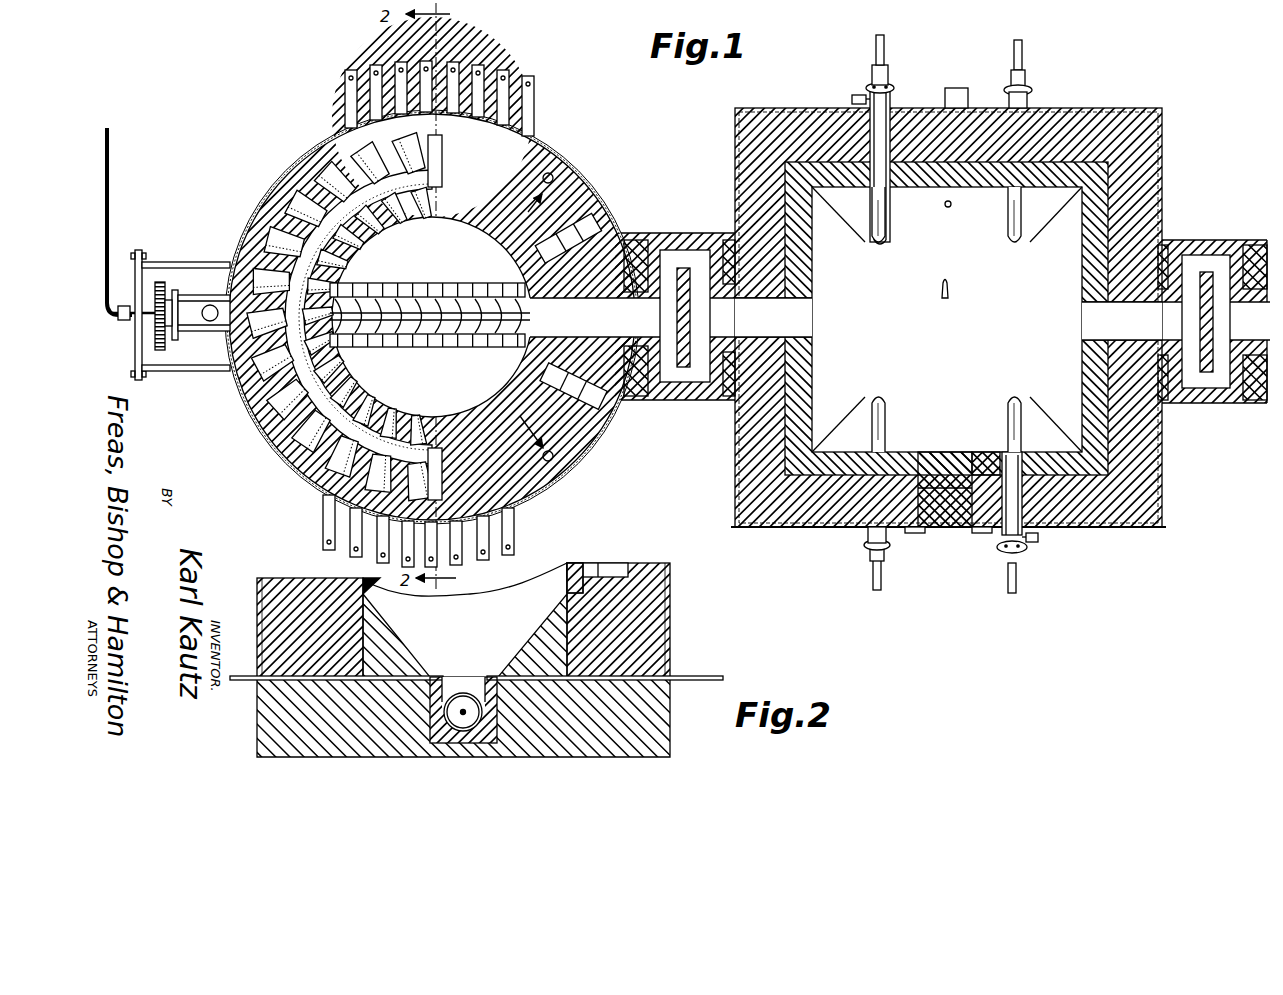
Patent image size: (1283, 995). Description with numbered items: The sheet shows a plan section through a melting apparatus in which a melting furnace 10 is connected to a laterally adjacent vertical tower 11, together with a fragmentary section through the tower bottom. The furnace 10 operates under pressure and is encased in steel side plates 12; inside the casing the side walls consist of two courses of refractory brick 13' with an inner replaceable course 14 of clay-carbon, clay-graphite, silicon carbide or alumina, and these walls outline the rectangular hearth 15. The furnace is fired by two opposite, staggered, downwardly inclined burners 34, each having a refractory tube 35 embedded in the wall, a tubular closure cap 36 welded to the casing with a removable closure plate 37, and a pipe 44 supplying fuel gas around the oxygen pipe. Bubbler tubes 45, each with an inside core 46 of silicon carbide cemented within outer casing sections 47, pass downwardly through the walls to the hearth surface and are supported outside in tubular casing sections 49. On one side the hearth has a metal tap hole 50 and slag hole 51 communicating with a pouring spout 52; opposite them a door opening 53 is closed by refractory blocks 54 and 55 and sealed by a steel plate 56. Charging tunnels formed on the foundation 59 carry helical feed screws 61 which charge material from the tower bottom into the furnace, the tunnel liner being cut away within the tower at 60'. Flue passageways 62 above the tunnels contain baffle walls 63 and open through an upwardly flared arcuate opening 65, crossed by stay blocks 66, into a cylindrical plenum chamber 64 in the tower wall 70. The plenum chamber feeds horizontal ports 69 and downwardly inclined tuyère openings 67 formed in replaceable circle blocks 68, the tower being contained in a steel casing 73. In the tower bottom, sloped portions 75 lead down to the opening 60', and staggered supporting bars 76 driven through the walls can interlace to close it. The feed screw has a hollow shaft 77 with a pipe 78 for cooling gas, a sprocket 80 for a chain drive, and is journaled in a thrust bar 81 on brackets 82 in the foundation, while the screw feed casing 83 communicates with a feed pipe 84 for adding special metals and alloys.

In FIG. 1, the melting furnace 10 is at (778, 530).
In FIG. 1, the vertical tower 11 is at (318, 136).
In FIG. 1, the side plates 12 is at (730, 146).
In FIG. 1, the courses of refractory brick 13' is at (641, 497).
In FIG. 1, the inner course 14 is at (800, 388).
In FIG. 1, the hearth 15 is at (948, 319).
In FIG. 1, the burners 34 is at (896, 90).
In FIG. 1, the refractory tube 35 is at (866, 176).
In FIG. 1, the tubular closure cap 36 is at (864, 96).
In FIG. 1, the closure plate 37 is at (872, 80).
In FIG. 1, the pipe 44 is at (852, 99).
In FIG. 1, the bubbler tubes 45 is at (1030, 80).
In FIG. 1, the inside core 46 is at (883, 41).
In FIG. 1, the outer casing sections 47 is at (887, 232).
In FIG. 1, the tubular casing sections 49 is at (1033, 96).
In FIG. 1, the metal tap hole 50 is at (950, 291).
In FIG. 1, the slag hole 51 is at (951, 205).
In FIG. 1, the pouring spout 52 is at (955, 92).
In FIG. 1, the door opening 53 is at (925, 456).
In FIG. 1, the refractory block 54 is at (953, 528).
In FIG. 1, the inner refractory block 55 is at (955, 456).
In FIG. 1, the steel plate 56 is at (920, 536).
In FIG. 1, the foundation 59 is at (630, 406).
In FIG. 2, the foundation 59 is at (672, 736).
In FIG. 1, the cut away portion 60' is at (431, 298).
In FIG. 2, the cut away portion 60' is at (641, 497).
In FIG. 1, the helical feed screw 61 is at (470, 342).
In FIG. 2, the helical feed screw 61 is at (464, 710).
In FIG. 1, the flue passageways 62 is at (618, 346).
In FIG. 1, the baffle walls 63 is at (692, 323).
In FIG. 1, the cylindrical plenum chamber 64 is at (286, 446).
In FIG. 1, the arcuate opening 65 is at (590, 240).
In FIG. 1, the stay blocks 66 is at (302, 206).
In FIG. 1, the tuyère openings 67 is at (382, 232).
In FIG. 2, the tuyère openings 67 is at (567, 588).
In FIG. 1, the circle block 68 is at (346, 246).
In FIG. 2, the circle block 68 is at (573, 563).
In FIG. 1, the horizontal ports 69 is at (432, 212).
In FIG. 1, the tower wall 70 is at (540, 152).
In FIG. 2, the tower wall 70 is at (670, 637).
In FIG. 1, the steel casing 73 is at (568, 462).
In FIG. 2, the steel casing 73 is at (257, 598).
In FIG. 2, the sloped portions 75 is at (400, 642).
In FIG. 1, the supporting bars 76 is at (482, 76).
In FIG. 2, the supporting bars 76 is at (245, 676).
In FIG. 1, the hollow shaft 77 is at (116, 322).
In FIG. 1, the pipe 78 is at (111, 196).
In FIG. 1, the sprocket 80 is at (160, 352).
In FIG. 1, the thrust bar 81 is at (141, 250).
In FIG. 1, the brackets 82 is at (181, 262).
In FIG. 1, the screw feed casing 83 is at (178, 290).
In FIG. 1, the feed pipe 84 is at (210, 305).